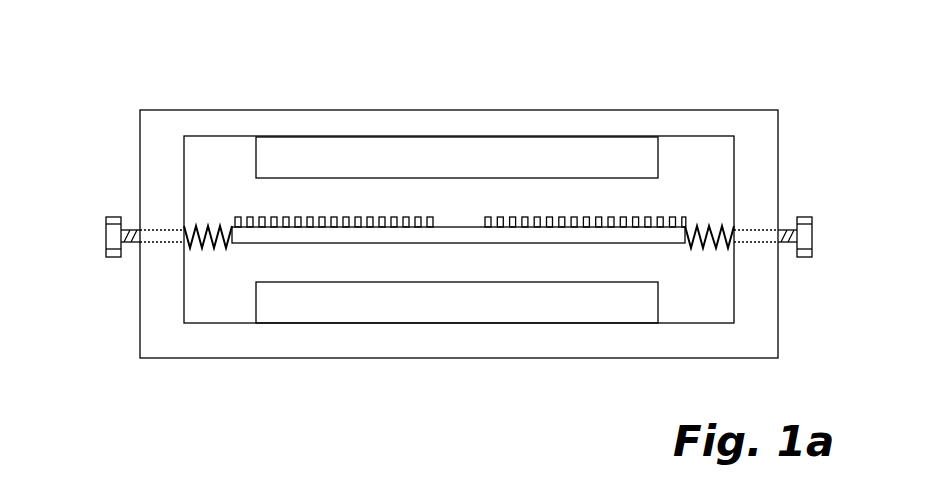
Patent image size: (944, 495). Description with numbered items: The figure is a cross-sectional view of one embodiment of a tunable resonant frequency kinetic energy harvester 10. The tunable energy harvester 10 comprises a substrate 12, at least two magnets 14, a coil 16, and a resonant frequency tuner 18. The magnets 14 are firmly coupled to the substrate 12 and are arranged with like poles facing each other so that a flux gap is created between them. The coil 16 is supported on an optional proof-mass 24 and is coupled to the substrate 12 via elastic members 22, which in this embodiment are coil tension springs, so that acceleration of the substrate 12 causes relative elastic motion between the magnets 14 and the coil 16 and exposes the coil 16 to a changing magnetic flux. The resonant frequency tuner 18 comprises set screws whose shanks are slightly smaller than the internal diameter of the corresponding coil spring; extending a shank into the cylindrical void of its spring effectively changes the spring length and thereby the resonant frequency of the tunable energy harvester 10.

The tunable energy harvester 10 is at (110, 36).
The substrate 12 is at (158, 345).
The magnets 14 is at (415, 155).
The coil 16 is at (667, 216).
The resonant frequency tuner 18 is at (113, 216).
The elastic members 22 is at (712, 248).
The proof-mass 24 is at (441, 243).